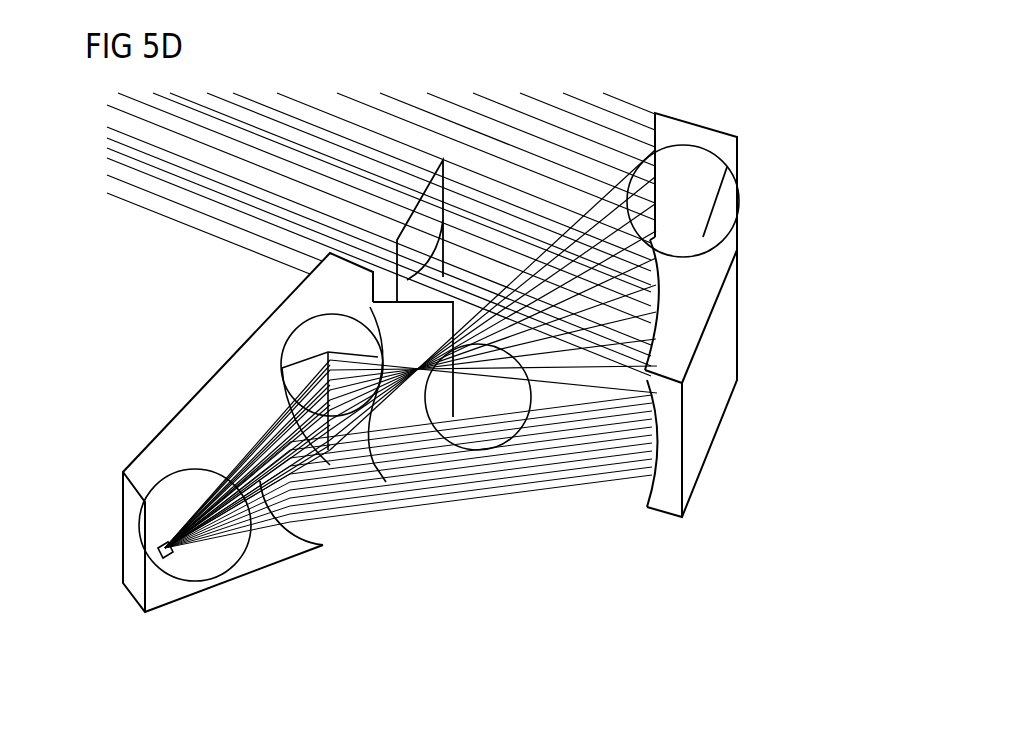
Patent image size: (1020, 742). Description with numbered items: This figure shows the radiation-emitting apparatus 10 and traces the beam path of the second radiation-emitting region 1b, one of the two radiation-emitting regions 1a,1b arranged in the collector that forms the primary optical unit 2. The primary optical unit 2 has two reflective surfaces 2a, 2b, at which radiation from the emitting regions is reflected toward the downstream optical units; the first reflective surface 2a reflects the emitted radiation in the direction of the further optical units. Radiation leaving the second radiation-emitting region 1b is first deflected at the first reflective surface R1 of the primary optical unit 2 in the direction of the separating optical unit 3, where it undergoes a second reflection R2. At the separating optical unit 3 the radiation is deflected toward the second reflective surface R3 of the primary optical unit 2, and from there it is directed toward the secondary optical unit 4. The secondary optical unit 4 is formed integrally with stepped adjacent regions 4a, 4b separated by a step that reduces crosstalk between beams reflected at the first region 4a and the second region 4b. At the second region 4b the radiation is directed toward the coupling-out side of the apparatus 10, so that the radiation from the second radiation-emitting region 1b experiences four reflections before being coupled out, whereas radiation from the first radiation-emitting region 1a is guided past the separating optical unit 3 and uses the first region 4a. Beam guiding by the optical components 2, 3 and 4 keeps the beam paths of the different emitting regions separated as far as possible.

The radiation-emitting apparatus 10 is at (650, 88).
The first radiation-emitting region 1a is at (214, 585).
The second radiation-emitting region 1b is at (168, 556).
The radiation-emitting regions 1a,1b is at (214, 585).
The primary optical unit 2 is at (187, 410).
The first reflective surface 2a is at (160, 505).
The second reflective surface 2b is at (300, 376).
The separating optical unit 3 is at (470, 412).
The secondary optical unit 4 is at (702, 128).
The first region of the secondary optical unit 4a is at (698, 316).
The second region of the secondary optical unit 4b is at (705, 176).
The first reflective surface R1 is at (245, 537).
The second reflection R2 is at (533, 380).
The second reflective surface R3 is at (290, 347).